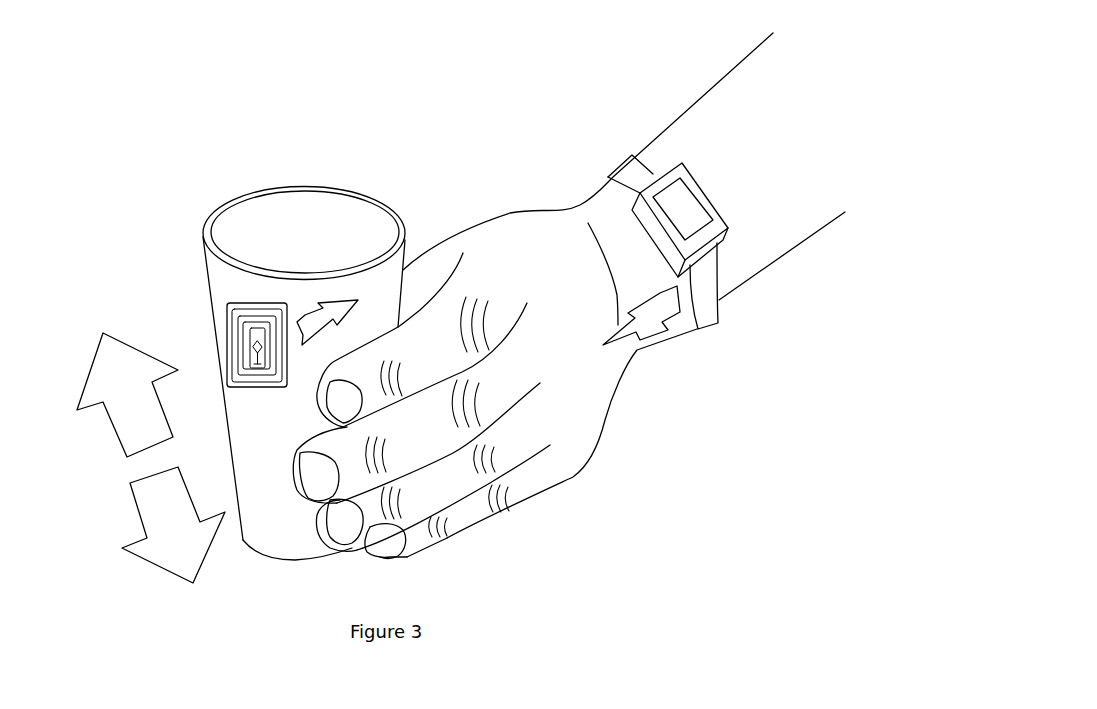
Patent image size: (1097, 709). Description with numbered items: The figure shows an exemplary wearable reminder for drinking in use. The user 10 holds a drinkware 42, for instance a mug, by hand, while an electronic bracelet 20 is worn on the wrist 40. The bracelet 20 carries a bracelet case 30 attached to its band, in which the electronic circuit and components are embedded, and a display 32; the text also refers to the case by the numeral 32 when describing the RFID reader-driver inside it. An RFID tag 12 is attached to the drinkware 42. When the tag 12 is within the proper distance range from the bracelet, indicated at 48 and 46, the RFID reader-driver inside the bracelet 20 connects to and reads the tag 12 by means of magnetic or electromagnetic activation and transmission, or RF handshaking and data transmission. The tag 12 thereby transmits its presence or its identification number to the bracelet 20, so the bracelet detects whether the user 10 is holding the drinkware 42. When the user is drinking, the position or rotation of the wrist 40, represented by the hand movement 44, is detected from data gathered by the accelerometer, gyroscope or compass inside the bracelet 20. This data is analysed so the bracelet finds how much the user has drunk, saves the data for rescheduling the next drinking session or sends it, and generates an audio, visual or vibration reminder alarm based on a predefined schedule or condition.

The user 10 is at (380, 197).
The RFID tag 12 is at (262, 388).
The bracelet 20 is at (703, 329).
The bracelet case 30 is at (703, 200).
The display 32 is at (687, 167).
The wrist 40 is at (537, 170).
The drinkware 42 is at (532, 490).
The hand movement 44 is at (110, 418).
The proper distance range from bracelet 46 is at (320, 314).
The proper distance range from bracelet 48 is at (623, 340).